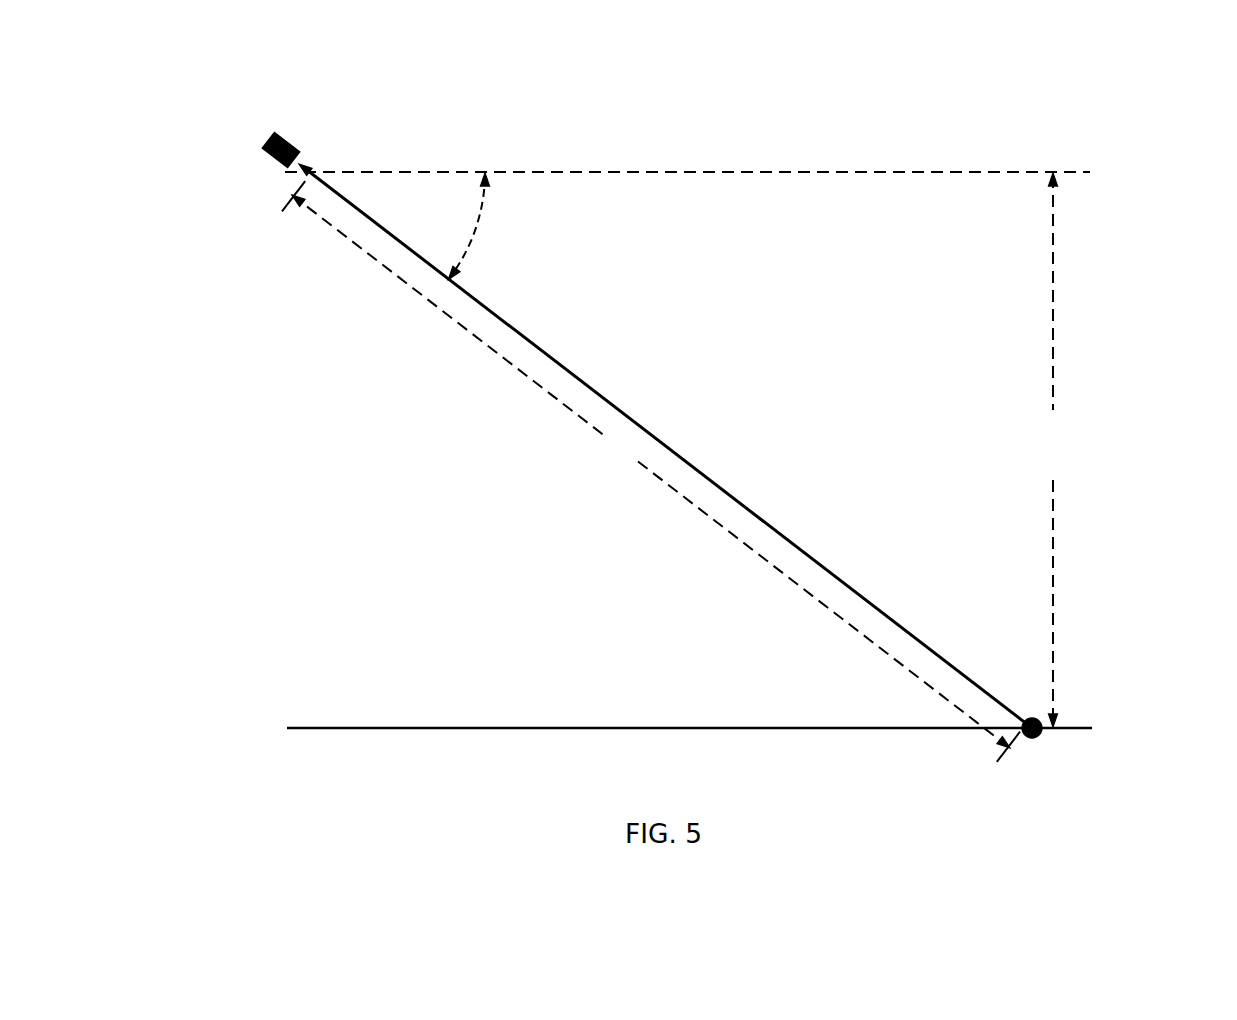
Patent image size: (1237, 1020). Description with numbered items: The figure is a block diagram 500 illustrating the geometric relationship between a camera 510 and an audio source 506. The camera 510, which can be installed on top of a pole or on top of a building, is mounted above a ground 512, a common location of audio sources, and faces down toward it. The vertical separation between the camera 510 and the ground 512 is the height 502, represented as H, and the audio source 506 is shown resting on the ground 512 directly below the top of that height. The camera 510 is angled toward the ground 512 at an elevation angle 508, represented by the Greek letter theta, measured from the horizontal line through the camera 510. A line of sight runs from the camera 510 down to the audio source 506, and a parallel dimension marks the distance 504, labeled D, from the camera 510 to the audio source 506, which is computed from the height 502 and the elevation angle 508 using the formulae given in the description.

The block diagram 500 is at (1208, 48).
The height 502 is at (1070, 466).
The distance 504 is at (582, 418).
The audio source 506 is at (1126, 773).
The elevation angle 508 is at (474, 231).
The camera 510 is at (266, 138).
The ground 512 is at (485, 727).